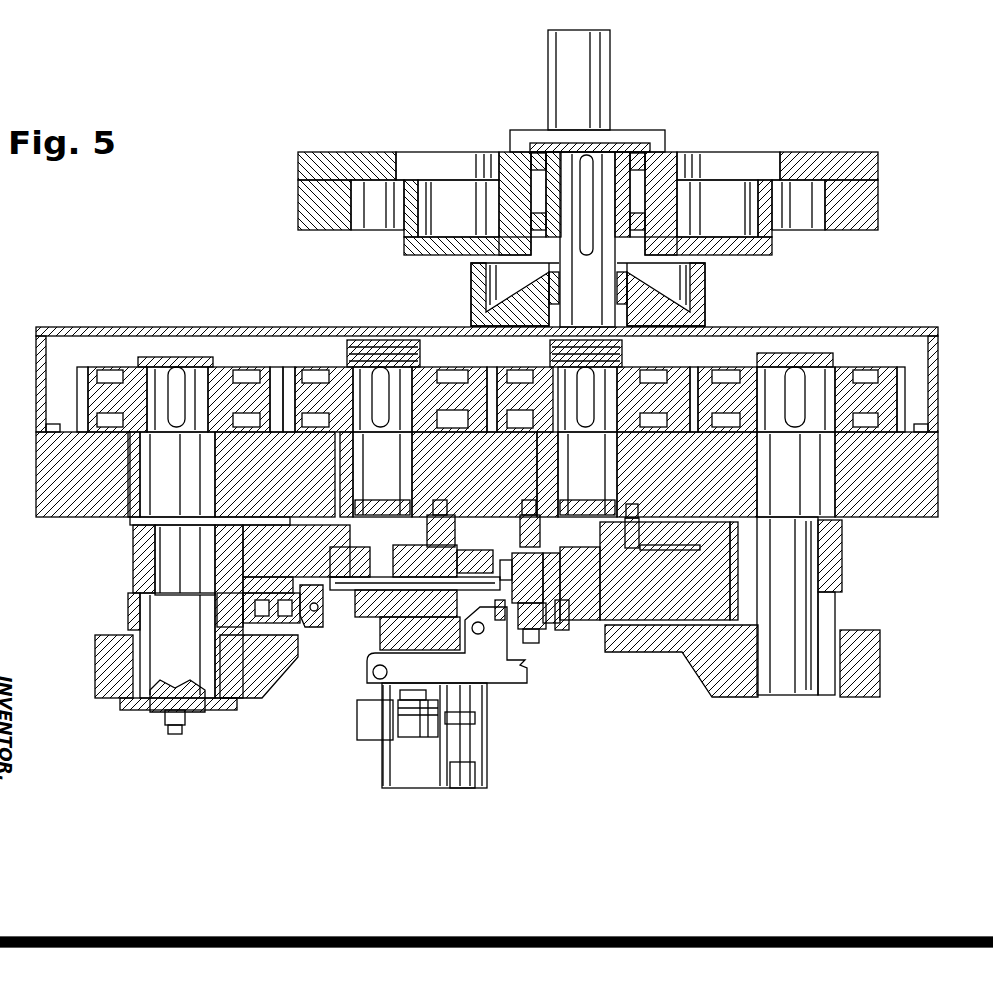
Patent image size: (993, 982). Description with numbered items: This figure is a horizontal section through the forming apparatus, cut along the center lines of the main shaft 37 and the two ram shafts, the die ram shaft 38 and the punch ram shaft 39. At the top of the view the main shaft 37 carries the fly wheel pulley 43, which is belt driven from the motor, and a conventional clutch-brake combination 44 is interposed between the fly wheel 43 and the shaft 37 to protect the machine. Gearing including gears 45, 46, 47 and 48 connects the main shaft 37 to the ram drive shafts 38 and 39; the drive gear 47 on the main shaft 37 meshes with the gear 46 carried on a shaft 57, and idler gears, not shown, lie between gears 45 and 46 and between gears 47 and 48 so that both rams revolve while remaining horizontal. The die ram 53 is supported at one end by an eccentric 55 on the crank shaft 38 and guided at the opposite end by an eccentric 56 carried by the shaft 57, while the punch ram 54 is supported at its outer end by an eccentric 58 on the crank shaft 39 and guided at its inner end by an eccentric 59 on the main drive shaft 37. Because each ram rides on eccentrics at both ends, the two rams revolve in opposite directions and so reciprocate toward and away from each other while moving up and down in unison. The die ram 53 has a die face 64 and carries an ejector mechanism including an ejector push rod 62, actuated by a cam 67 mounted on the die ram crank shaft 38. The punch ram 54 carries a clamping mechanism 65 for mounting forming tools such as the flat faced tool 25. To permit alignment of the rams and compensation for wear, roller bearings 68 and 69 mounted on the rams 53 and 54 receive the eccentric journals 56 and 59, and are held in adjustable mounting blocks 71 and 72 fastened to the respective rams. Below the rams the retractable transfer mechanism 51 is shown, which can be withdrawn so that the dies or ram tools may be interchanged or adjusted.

The forming tool 25 is at (555, 590).
The main shaft 37 is at (587, 178).
The die ram shaft 38 is at (133, 526).
The punch ram shaft 39 is at (822, 508).
The fly wheel pulley 43 is at (878, 200).
The clutch-brake combination 44 is at (782, 243).
The gear 45 is at (258, 367).
The gear 46 is at (328, 367).
The drive gear 47 is at (508, 367).
The gear 48 is at (858, 367).
The transfer mechanism 51 is at (488, 727).
The die ram 53 is at (133, 578).
The punch ram 54 is at (842, 556).
The eccentric 55 is at (168, 553).
The eccentric 56 is at (378, 486).
The shaft 57 is at (355, 348).
The eccentric 58 is at (805, 578).
The eccentric 59 is at (577, 486).
The ejector push rod 62 is at (352, 592).
The die face 64 is at (494, 555).
The clamping mechanism 65 is at (538, 630).
The cam 67 is at (128, 610).
The roller bearing 68 is at (444, 527).
The roller bearing 69 is at (628, 522).
The adjustable mounting block 71 is at (352, 532).
The adjustable mounting block 72 is at (522, 527).